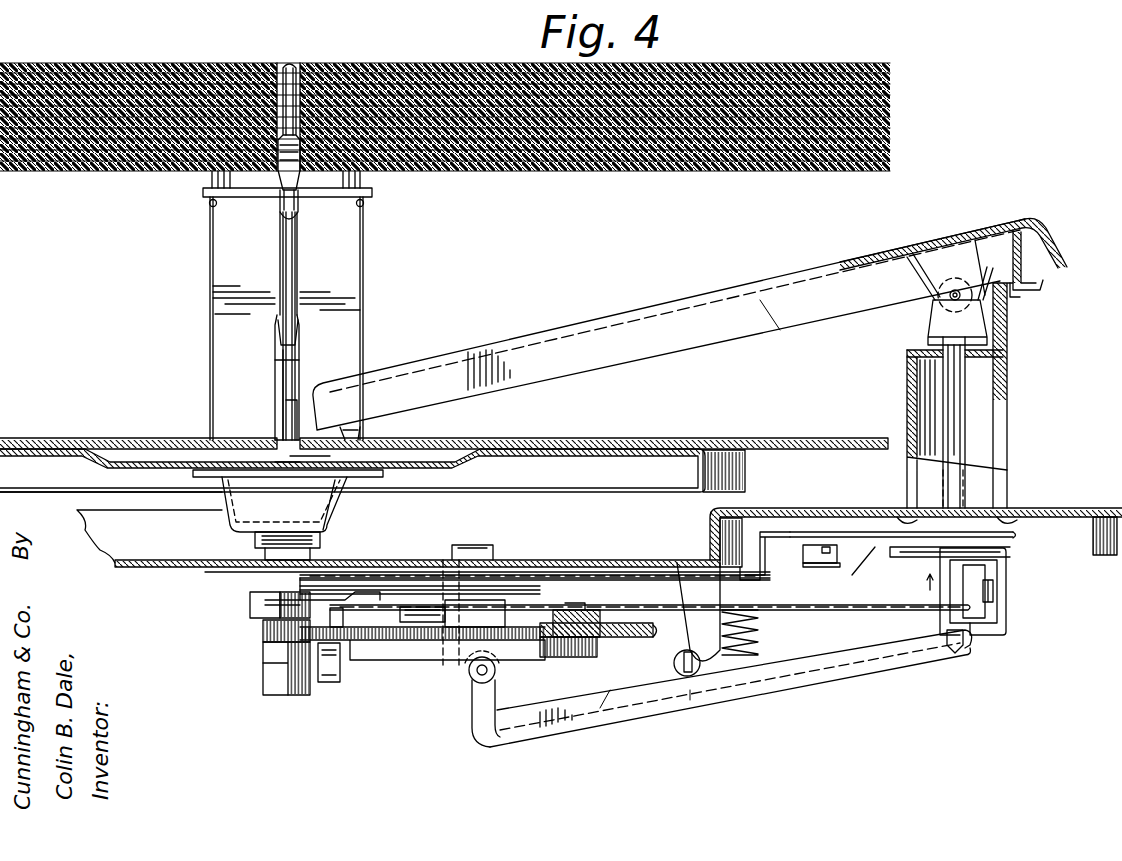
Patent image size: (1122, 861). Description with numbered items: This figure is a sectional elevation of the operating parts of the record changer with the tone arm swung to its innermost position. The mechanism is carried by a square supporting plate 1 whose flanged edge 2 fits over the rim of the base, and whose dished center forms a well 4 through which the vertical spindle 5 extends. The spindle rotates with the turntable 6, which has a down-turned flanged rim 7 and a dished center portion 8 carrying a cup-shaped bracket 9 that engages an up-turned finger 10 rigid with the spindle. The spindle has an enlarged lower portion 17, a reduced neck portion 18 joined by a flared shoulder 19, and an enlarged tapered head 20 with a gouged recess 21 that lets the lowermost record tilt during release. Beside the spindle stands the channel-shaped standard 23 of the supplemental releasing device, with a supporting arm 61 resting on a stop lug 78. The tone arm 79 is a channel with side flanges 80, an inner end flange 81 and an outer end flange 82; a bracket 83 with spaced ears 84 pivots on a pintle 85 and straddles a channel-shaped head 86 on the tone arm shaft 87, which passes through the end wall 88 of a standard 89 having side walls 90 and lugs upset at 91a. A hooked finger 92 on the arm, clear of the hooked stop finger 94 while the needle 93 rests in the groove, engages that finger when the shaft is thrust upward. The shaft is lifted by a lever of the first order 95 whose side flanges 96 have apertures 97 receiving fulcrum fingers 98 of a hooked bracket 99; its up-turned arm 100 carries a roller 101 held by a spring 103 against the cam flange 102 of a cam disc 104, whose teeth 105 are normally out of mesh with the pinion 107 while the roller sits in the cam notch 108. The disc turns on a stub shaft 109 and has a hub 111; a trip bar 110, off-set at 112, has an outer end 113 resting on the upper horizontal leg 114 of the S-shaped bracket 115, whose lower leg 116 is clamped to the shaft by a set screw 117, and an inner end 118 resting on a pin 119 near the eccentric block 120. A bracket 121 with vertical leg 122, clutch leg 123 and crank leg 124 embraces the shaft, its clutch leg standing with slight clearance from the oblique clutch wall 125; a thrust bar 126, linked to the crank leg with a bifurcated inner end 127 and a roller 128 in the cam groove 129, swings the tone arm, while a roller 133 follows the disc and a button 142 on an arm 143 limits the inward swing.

The supporting plate 1 is at (1050, 508).
The flanged edge 2 is at (1103, 555).
The well 4 is at (540, 560).
The spindle 5 is at (275, 372).
The turntable 6 is at (540, 478).
The flanged rim 7 is at (745, 467).
The center portion 8 is at (412, 470).
The cup-shaped bracket 9 is at (340, 510).
The up-turned finger 10 is at (288, 515).
The lower portion of the spindle 17 is at (297, 366).
The intermediate neck portion 18 is at (280, 274).
The flared shoulder 19 is at (281, 327).
The enlarged head 20 is at (289, 63).
The gouged recess 21 is at (278, 198).
The channel-shaped standard 23 is at (333, 240).
The supporting arm 61 is at (346, 181).
The stop lug 78 is at (203, 198).
The tone arm 79 is at (655, 307).
The side flanges 80 is at (780, 330).
The inner end flange 81 is at (300, 410).
The outer end flange 82 is at (1053, 250).
The bracket 83 is at (925, 276).
The spaced ears 84 is at (952, 260).
The pintle 85 is at (962, 288).
The channel-shaped head 86 is at (928, 318).
The tone arm shaft 87 is at (965, 405).
The end wall 88 is at (905, 352).
The standard 89 is at (907, 478).
The side walls 90 is at (985, 480).
The upset lug ends 91a is at (1010, 510).
The hooked finger 92 is at (1043, 287).
The needle 93 is at (360, 432).
The hooked stop finger 94 is at (1015, 297).
The lever of the first order 95 is at (880, 655).
The side flanges 96 is at (600, 720).
The apertures 97 is at (683, 706).
The fulcrum fingers 98 is at (677, 662).
The hooked bracket 99 is at (688, 597).
The up-turned arm 100 is at (485, 717).
The roller 101 is at (495, 676).
The cam flange 102 is at (390, 657).
The spring 103 is at (760, 636).
The cam disc 104 is at (612, 637).
The teeth 105 is at (655, 637).
The pinion 107 is at (263, 634).
The cam notch 108 is at (445, 665).
The stub shaft 109 is at (450, 578).
The trip bar 110 is at (520, 560).
The hub 111 is at (505, 600).
The off-set point 112 is at (765, 572).
The outer end of trip bar 113 is at (868, 540).
The upper horizontal leg 114 is at (1013, 538).
The S-shaped bracket 115 is at (910, 587).
The lower leg 116 is at (985, 565).
The set screw 117 is at (993, 585).
The inner end of trip bar 118 is at (350, 607).
The pin 119 is at (340, 588).
The eccentric block 120 is at (250, 600).
The bracket 121 is at (1006, 620).
The vertical leg 122 is at (997, 603).
The clutch leg 123 is at (900, 557).
The crank leg 124 is at (975, 640).
The oblique clutch wall 125 is at (852, 575).
The thrust bar 126 is at (858, 610).
The bifurcated inner end 127 is at (420, 606).
The roller 128 is at (572, 606).
The cam groove 129 is at (572, 657).
The roller 133 is at (328, 682).
The button 142 is at (815, 545).
The arm 143 is at (821, 575).